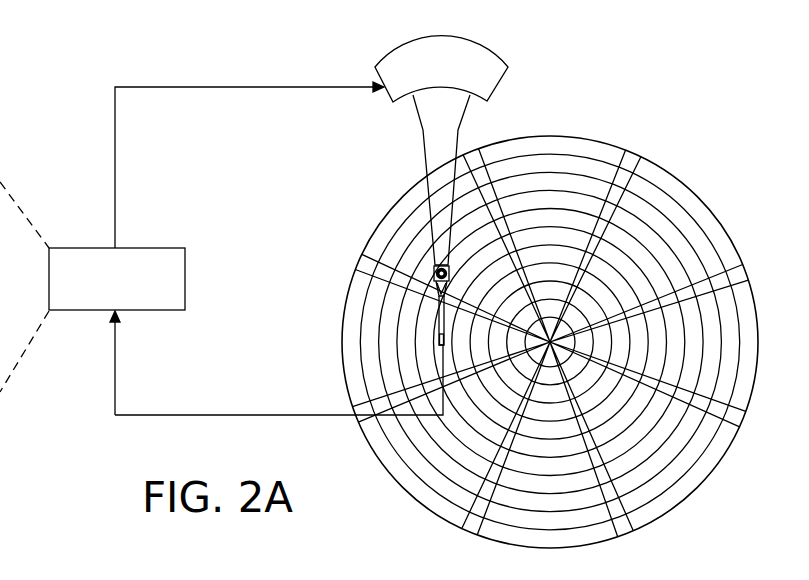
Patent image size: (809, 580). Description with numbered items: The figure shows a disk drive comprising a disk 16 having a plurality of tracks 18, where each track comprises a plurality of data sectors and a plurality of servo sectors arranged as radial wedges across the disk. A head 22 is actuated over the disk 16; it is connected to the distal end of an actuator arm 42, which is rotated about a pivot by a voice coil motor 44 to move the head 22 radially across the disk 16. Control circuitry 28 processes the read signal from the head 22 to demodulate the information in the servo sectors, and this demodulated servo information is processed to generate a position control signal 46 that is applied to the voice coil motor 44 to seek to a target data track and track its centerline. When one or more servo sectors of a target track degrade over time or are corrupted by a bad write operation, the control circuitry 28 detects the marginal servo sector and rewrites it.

The disk 16 is at (694, 187).
The tracks 18 is at (548, 166).
The head 22 is at (434, 346).
The control circuitry 28 is at (152, 248).
The actuator arm 42 is at (424, 166).
The voice coil motor (VCM) 44 is at (391, 99).
The position control signal 46 is at (114, 156).